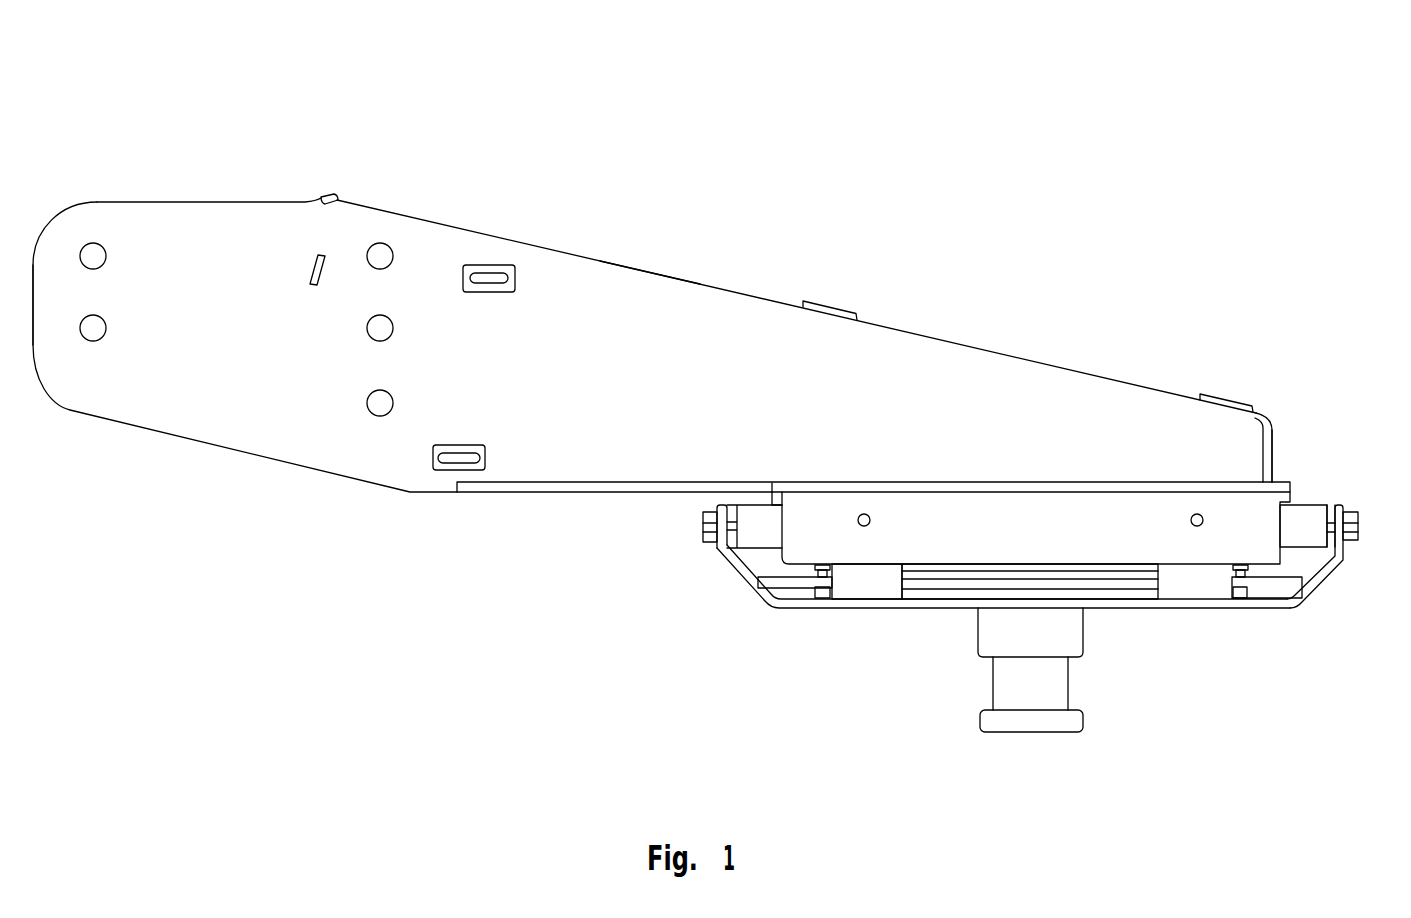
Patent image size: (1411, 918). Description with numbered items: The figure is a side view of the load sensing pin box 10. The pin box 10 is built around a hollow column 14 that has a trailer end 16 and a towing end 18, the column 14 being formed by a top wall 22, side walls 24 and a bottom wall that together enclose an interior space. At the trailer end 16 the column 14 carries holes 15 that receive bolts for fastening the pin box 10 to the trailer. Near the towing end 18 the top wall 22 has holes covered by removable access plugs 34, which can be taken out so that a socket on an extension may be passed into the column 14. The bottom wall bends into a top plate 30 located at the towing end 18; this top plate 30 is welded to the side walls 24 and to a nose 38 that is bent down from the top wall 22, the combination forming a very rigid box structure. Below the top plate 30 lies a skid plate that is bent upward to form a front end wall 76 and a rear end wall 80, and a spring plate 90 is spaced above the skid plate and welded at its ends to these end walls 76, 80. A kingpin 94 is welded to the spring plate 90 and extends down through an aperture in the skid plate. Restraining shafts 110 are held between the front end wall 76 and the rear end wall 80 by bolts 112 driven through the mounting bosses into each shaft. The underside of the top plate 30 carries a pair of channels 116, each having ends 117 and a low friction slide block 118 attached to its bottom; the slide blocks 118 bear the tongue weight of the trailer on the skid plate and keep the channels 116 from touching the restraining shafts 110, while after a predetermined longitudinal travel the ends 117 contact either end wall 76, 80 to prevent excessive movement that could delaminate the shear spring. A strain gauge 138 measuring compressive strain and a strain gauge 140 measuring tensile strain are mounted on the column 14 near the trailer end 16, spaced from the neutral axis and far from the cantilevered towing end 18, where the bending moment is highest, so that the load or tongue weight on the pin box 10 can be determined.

The load sensing pin box 10 is at (719, 182).
The column 14 is at (407, 213).
The holes 15 is at (105, 262).
The trailer end 16 is at (133, 165).
The towing end 18 is at (1246, 288).
The top wall 22 is at (755, 293).
The side wall 24 is at (676, 391).
The top plate 30 is at (542, 492).
The access plugs 34 is at (832, 306).
The nose 38 is at (1275, 455).
The front end wall 76 is at (1345, 545).
The rear end wall 80 is at (717, 558).
The spring plate 90 is at (936, 583).
The kingpin 94 is at (1032, 724).
The restraining shafts 110 is at (1312, 500).
The bolts 112 is at (700, 533).
The channels 116 is at (1095, 528).
The ends 117 is at (782, 530).
The slide block 118 is at (848, 588).
The strain gauge 138 is at (497, 265).
The strain gauge 140 is at (438, 470).